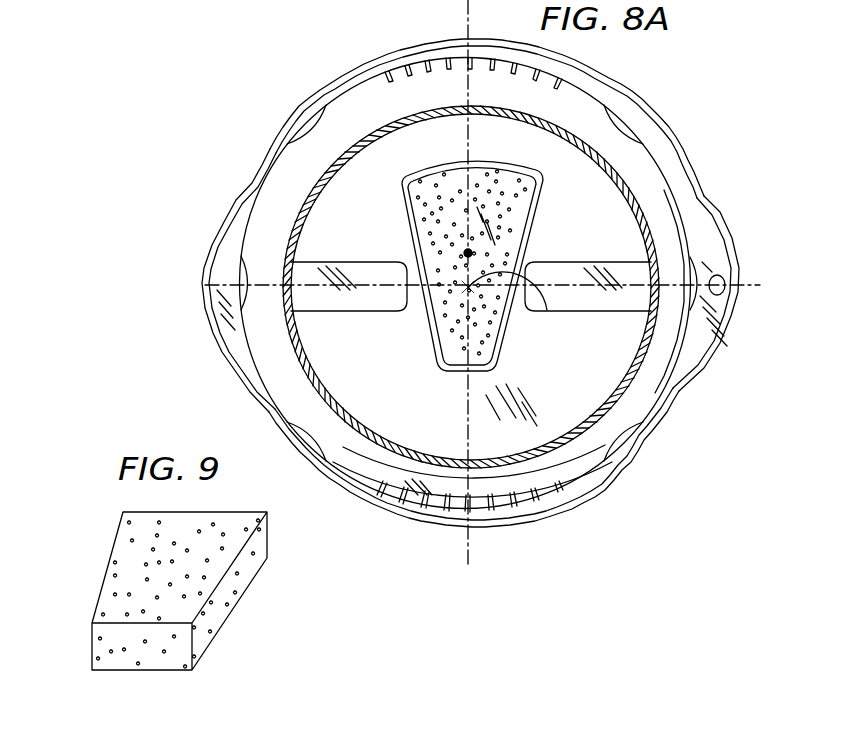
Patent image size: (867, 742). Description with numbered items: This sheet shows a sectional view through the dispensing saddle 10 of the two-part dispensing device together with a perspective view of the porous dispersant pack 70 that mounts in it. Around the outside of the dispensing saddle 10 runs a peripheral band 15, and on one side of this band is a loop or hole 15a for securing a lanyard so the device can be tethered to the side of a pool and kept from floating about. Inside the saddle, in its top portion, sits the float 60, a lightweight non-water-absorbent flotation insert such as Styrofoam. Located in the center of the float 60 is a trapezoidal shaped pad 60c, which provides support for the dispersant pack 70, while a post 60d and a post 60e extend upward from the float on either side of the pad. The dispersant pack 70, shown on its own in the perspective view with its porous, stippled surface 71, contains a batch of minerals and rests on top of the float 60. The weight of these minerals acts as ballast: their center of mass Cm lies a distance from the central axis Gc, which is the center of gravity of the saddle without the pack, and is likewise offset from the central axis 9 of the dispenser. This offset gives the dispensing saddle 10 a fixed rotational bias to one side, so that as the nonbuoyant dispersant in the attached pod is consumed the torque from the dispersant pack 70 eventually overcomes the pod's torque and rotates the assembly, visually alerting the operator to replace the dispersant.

In FIG. 8A, the dispensing saddle 10 is at (326, 87).
In FIG. 8A, the peripheral band 15 is at (237, 205).
In FIG. 8A, the loop or hole 15a is at (733, 249).
In FIG. 8A, the float 60 is at (572, 163).
In FIG. 8A, the trapezoidal shaped pad 60c is at (532, 227).
In FIG. 8A, the post 60d is at (358, 262).
In FIG. 8A, the post 60e is at (594, 300).
In FIG. 8A, the dispersant pack 70 is at (441, 229).
In FIG. 9, the dispersant pack 70 is at (140, 670).
In FIG. 8A, the filter sheet pores 71 is at (508, 193).
In FIG. 9, the filter sheet pores 71 is at (148, 566).
In FIG. 8A, the center of mass Cm is at (471, 251).
In FIG. 8A, the center of gravity axis Gc is at (513, 307).
In FIG. 8A, the central axis 9 is at (466, 288).